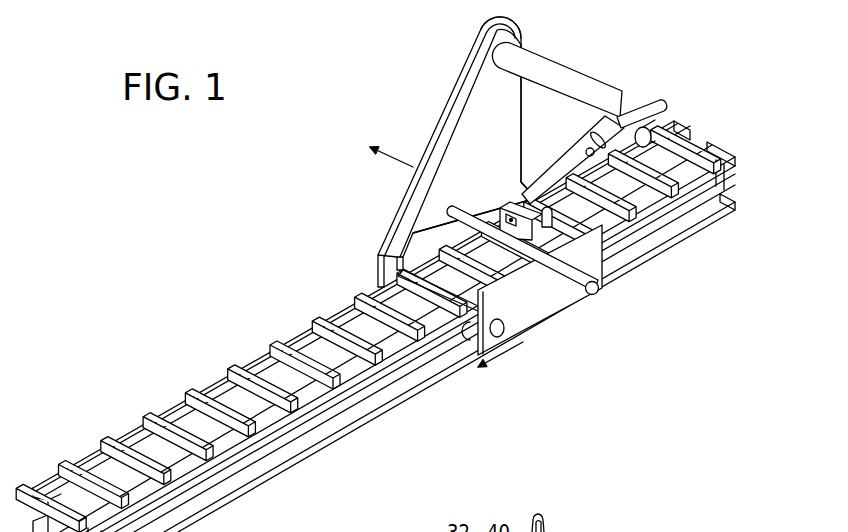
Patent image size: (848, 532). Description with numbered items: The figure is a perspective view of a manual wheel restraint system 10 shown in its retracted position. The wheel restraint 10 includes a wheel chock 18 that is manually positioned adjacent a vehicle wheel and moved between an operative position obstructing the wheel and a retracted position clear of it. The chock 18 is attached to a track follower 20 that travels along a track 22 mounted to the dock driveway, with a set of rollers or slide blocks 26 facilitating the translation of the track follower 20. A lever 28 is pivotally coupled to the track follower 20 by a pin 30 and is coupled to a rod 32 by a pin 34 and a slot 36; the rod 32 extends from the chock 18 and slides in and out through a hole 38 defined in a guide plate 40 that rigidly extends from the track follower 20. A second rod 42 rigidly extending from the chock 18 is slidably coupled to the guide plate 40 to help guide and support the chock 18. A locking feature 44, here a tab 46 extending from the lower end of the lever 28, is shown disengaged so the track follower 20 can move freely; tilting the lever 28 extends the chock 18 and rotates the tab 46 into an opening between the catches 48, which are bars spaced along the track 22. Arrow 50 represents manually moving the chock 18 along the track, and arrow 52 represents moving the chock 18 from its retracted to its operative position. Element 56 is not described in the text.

The wheel restraint system 10 is at (125, 229).
The wheel chock 18 is at (420, 137).
The track follower 20 is at (435, 255).
The track 22 is at (133, 430).
The rollers or slide blocks 26 is at (461, 340).
The lever 28 is at (642, 100).
The pin 30 is at (515, 219).
The rod 32 is at (557, 72).
The pin 34 is at (583, 147).
The slot 36 is at (663, 200).
The hole 38 is at (497, 58).
The guide plate 40 is at (522, 32).
The second rod 42 is at (556, 282).
The locking feature 44 is at (480, 183).
The tab 46 is at (522, 192).
The catches 48 is at (317, 321).
The arrow 50 is at (501, 343).
The arrow 52 is at (392, 158).
The rib 56 is at (438, 100).